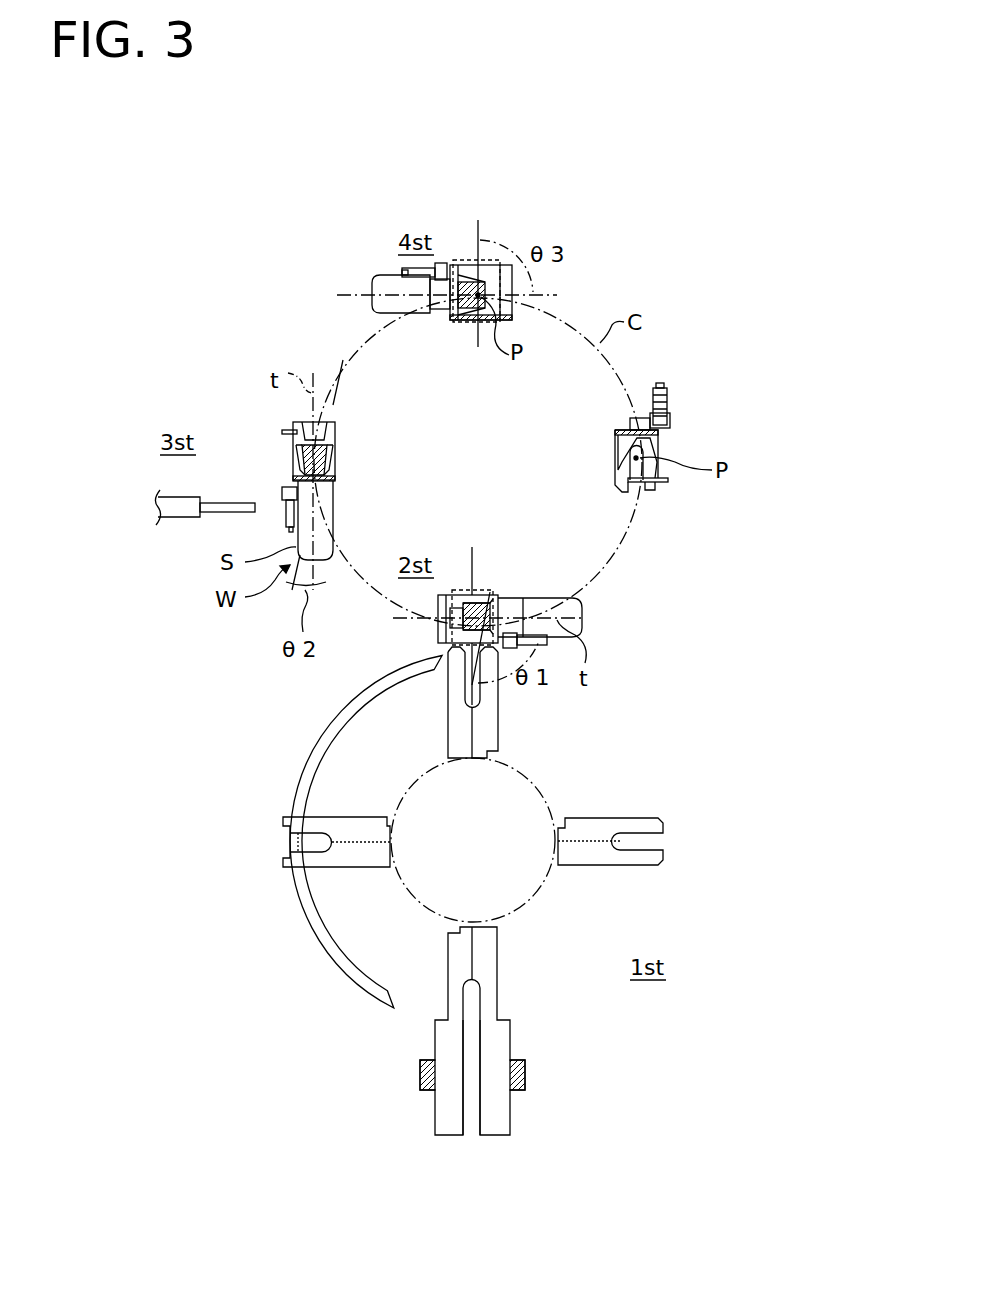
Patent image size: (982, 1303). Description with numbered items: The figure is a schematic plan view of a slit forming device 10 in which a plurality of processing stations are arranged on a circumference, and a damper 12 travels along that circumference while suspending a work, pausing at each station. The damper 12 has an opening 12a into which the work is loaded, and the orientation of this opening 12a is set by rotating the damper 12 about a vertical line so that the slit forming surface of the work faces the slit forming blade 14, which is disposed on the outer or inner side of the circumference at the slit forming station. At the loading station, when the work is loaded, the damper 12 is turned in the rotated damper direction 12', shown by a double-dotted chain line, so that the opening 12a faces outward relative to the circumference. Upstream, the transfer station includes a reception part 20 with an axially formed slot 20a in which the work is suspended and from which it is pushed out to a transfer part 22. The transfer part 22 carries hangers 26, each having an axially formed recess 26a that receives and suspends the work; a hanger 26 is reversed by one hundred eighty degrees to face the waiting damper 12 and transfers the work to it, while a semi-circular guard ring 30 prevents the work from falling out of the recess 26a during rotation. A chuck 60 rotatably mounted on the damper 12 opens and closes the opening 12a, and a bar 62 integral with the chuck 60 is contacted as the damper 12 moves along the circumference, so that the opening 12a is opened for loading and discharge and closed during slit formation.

The slit forming device 10 is at (322, 228).
The damper 12 is at (468, 584).
The rotated damper direction 12' is at (498, 585).
The opening 12a is at (640, 490).
The slit forming blade 14 is at (215, 518).
The reception part 20 is at (433, 1113).
The slot 20a is at (472, 1100).
The transfer part 22 is at (434, 921).
The hanger 26 is at (347, 858).
The recess 26a is at (310, 838).
The guard ring 30 is at (318, 950).
The chuck 60 is at (668, 483).
The bar 62 is at (668, 398).